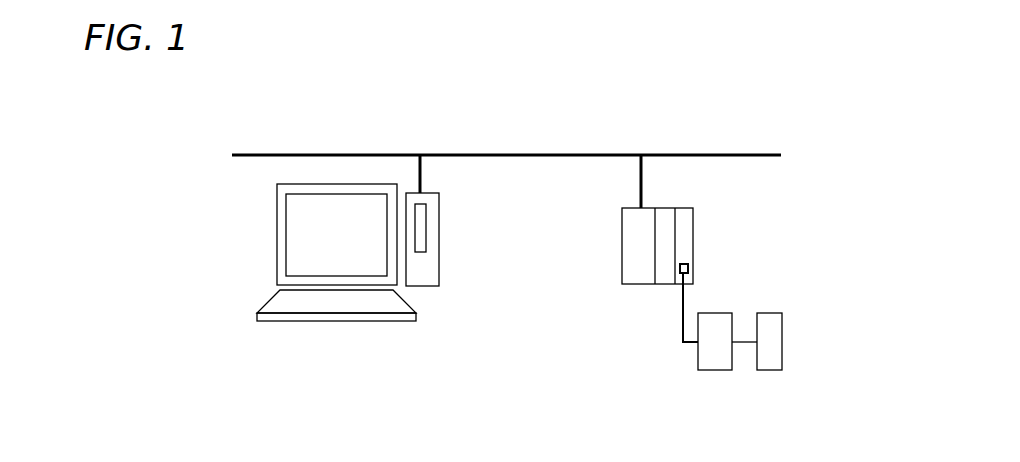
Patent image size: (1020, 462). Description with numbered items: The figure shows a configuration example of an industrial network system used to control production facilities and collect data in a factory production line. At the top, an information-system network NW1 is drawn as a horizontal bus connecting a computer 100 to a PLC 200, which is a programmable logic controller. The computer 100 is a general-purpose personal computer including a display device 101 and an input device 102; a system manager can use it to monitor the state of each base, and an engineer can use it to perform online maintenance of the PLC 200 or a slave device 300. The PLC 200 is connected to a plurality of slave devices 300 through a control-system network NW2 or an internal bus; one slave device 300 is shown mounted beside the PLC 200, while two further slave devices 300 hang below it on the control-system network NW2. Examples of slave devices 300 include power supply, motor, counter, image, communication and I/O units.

The computer 100 is at (438, 225).
The display device 101 is at (286, 214).
The input device 102 is at (278, 302).
The PLC 200 is at (622, 225).
The slave device 300 is at (663, 225).
The information-system network NW1 is at (542, 153).
The control-system network NW2 is at (685, 303).